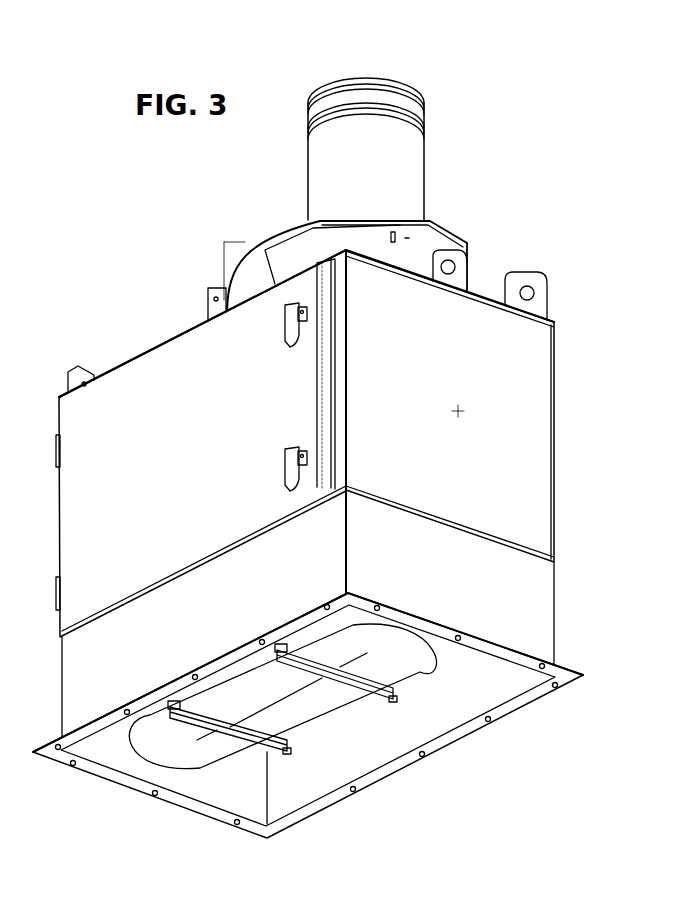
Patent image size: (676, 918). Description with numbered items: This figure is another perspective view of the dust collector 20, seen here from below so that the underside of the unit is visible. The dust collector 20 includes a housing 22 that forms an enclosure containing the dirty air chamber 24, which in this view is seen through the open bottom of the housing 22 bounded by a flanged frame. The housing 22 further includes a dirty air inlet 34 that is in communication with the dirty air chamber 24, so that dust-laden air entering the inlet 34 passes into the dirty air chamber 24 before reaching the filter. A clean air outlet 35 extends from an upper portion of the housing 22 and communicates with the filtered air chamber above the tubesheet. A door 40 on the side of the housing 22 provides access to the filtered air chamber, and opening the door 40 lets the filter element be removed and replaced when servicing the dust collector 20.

The dust collector 20 is at (124, 272).
The housing 22 is at (540, 385).
The dirty air chamber 24 is at (475, 702).
The dirty air inlet 34 is at (303, 793).
The clean air outlet 35 is at (378, 78).
The door 40 is at (73, 489).